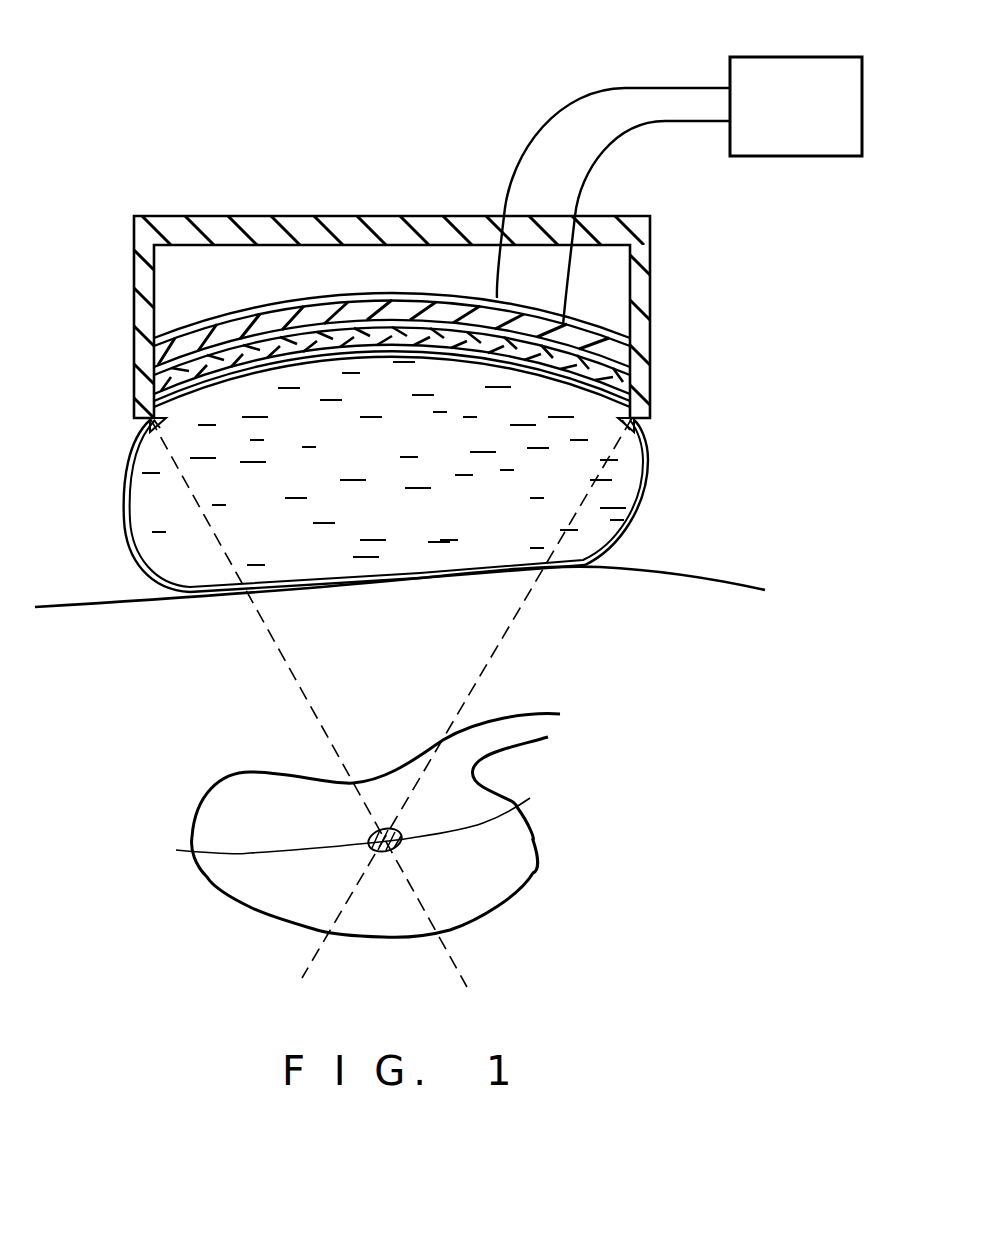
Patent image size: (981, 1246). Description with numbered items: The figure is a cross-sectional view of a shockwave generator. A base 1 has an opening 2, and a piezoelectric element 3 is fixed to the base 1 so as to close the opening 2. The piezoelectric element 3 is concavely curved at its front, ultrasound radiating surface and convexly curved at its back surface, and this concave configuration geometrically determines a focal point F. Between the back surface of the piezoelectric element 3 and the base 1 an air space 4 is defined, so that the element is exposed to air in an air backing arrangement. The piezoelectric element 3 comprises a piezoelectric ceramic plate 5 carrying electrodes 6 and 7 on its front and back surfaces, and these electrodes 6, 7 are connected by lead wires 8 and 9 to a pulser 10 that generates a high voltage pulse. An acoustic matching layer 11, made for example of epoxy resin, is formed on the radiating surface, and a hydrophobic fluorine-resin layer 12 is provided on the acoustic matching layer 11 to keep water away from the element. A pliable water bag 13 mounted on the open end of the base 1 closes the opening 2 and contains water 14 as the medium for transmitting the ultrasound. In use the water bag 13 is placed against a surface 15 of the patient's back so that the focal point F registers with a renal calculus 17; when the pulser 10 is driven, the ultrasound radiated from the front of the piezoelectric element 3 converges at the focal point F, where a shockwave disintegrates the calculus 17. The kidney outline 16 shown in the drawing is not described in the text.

The base 1 is at (652, 272).
The opening 2 is at (634, 428).
The piezoelectric element 3 is at (352, 290).
The air space 4 is at (165, 288).
The piezoelectric ceramic plate 5 is at (610, 350).
The electrode 6 is at (600, 332).
The electrode 7 is at (618, 378).
The lead wire 8 is at (614, 88).
The lead wire 9 is at (664, 120).
The pulser 10 is at (803, 57).
The acoustic matching layer 11 is at (632, 402).
The fluorine-resin layer 12 is at (150, 400).
The water bag 13 is at (125, 543).
The water 14 is at (130, 498).
The surface of the back of a patient's kidney 15 is at (718, 575).
The organ 16 is at (535, 877).
The renal calculus 17 is at (370, 819).
The focal point F is at (278, 845).